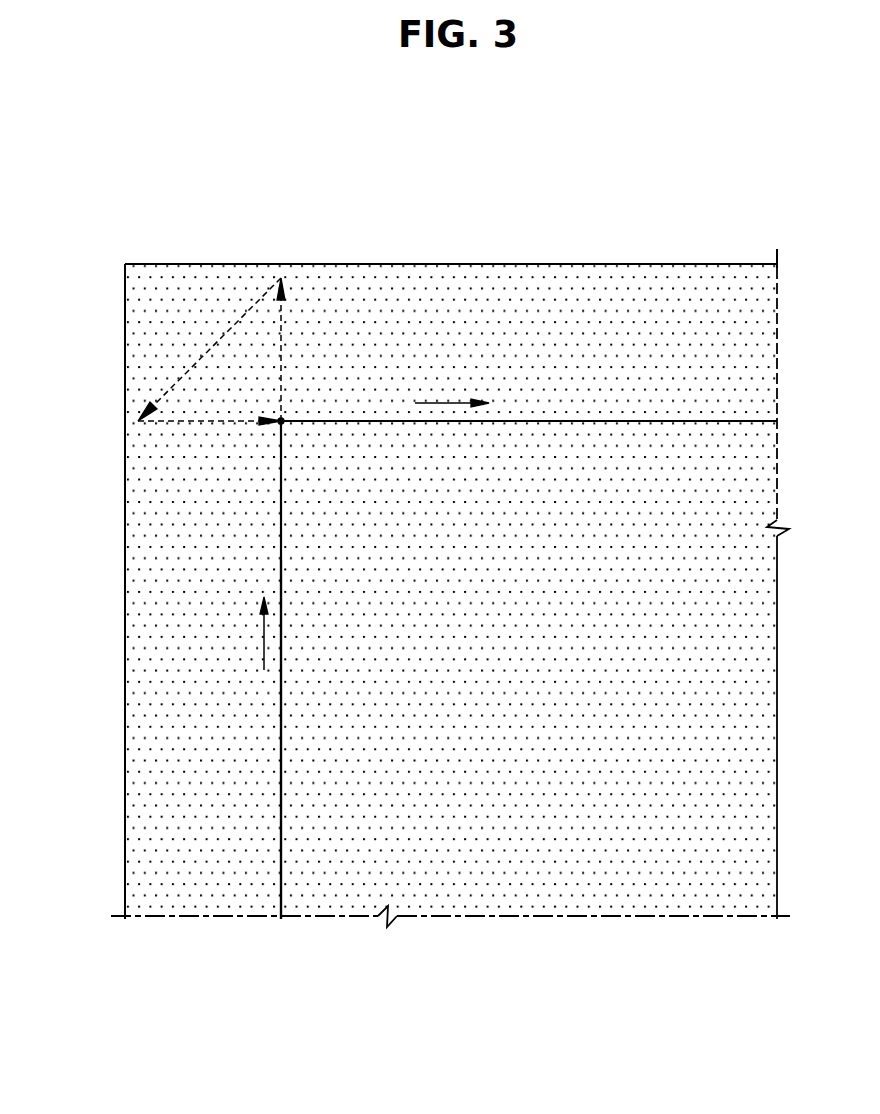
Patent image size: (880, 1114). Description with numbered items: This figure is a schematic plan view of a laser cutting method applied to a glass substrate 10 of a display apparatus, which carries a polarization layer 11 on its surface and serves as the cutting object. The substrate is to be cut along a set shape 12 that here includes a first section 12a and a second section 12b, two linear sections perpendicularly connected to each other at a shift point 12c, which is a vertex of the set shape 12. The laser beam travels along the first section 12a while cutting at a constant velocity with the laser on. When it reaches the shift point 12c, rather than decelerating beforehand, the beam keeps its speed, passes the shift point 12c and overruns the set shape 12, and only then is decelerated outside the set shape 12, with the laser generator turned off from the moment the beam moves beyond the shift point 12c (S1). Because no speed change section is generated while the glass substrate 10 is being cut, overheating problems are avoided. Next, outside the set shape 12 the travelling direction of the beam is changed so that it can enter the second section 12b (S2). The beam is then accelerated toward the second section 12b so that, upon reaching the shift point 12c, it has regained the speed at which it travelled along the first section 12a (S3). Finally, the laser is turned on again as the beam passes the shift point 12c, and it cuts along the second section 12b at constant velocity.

The glass substrate 10 is at (112, 887).
The polarization layer 11 is at (390, 290).
The set shape 12 is at (275, 887).
The first section 12a is at (283, 599).
The second section 12b is at (555, 420).
The shift point 12c is at (283, 424).
The overrun step S1 is at (283, 352).
The direction change step S2 is at (210, 347).
The acceleration step S3 is at (210, 424).